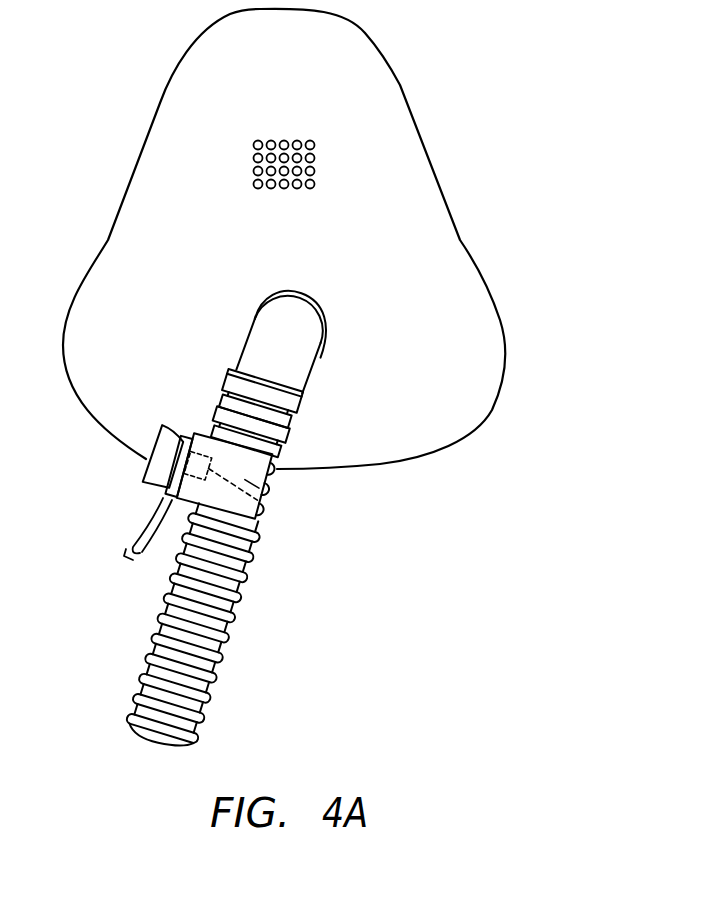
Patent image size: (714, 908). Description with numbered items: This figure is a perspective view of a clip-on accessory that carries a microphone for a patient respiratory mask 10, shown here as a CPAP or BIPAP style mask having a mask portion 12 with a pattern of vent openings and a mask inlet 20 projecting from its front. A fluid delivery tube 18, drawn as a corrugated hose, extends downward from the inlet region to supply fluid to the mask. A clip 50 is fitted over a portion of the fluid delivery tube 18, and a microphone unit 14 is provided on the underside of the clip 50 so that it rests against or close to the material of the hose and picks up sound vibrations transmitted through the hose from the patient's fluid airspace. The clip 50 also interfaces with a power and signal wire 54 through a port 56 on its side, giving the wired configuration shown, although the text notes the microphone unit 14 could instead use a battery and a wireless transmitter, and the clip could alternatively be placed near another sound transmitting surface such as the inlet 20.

The respiratory mask 10 is at (458, 116).
The mask portion 12 is at (496, 338).
The microphone unit 14 is at (268, 506).
The fluid delivery tube 18 is at (216, 660).
The mask inlet 20 is at (262, 322).
The clip 50 is at (272, 487).
The power and signal wire 54 is at (138, 546).
The port 56 is at (160, 496).